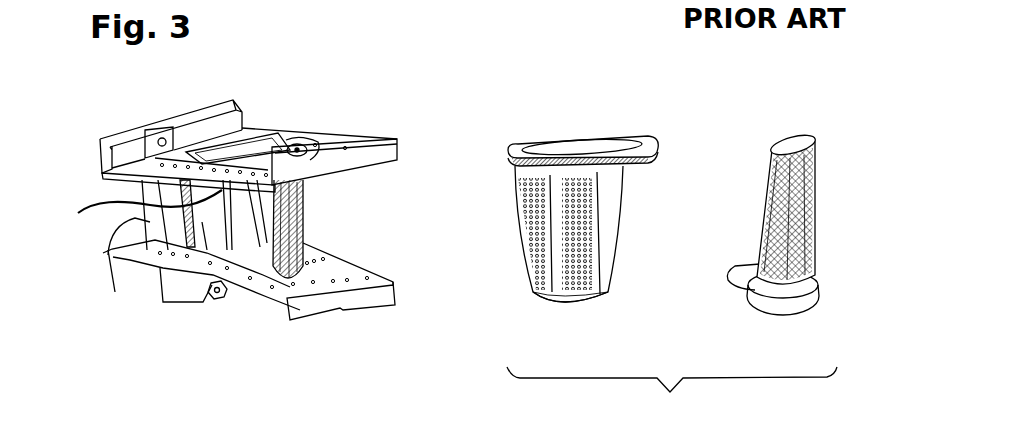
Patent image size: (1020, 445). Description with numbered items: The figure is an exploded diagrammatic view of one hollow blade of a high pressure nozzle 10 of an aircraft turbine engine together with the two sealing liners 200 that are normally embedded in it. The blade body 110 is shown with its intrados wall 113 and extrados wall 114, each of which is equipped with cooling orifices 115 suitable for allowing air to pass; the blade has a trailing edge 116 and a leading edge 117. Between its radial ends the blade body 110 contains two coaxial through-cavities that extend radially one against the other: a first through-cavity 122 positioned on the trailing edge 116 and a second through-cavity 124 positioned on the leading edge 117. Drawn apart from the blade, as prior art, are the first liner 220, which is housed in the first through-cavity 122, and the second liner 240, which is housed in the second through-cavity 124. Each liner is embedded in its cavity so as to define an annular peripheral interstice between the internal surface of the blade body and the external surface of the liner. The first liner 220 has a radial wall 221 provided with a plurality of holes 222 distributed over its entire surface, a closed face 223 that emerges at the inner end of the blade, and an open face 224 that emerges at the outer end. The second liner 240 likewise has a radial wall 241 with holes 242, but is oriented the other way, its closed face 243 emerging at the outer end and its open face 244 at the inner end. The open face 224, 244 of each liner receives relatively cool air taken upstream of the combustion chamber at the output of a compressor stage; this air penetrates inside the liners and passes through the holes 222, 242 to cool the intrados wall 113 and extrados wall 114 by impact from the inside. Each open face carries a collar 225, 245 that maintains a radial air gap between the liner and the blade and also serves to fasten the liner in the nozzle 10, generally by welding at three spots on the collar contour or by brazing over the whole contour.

The high pressure nozzle 10 is at (147, 110).
The blade body 110 is at (245, 297).
The intrados wall 113 is at (216, 305).
The extrados wall 114 is at (335, 194).
The cooling orifices 115 is at (123, 225).
The trailing edge 116 is at (116, 284).
The leading edge 117 is at (305, 223).
The first through-cavity 122 is at (260, 147).
The second through-cavity 124 is at (280, 143).
The sealing liner 200 is at (672, 395).
The first liner 220 is at (587, 219).
The radial wall 221 is at (513, 220).
The holes 222 is at (588, 248).
The closed face 223 is at (587, 303).
The open face 224 is at (577, 135).
The collar 225 is at (643, 137).
The second liner 240 is at (804, 245).
The radial wall 241 is at (817, 193).
The holes 242 is at (836, 223).
The closed face 243 is at (803, 133).
The open face 244 is at (819, 302).
The collar 245 is at (750, 263).